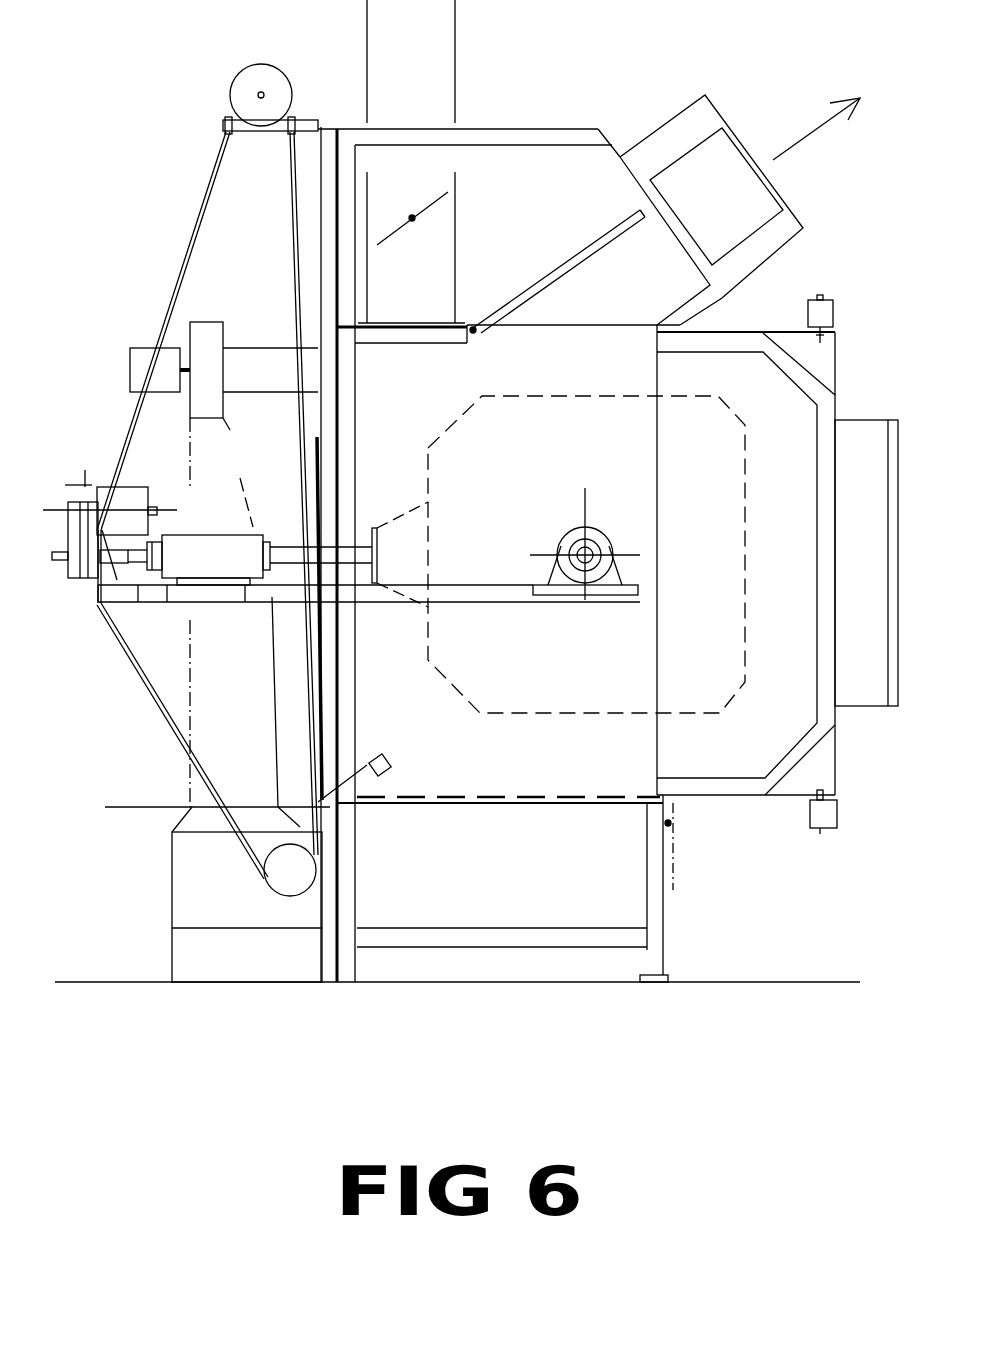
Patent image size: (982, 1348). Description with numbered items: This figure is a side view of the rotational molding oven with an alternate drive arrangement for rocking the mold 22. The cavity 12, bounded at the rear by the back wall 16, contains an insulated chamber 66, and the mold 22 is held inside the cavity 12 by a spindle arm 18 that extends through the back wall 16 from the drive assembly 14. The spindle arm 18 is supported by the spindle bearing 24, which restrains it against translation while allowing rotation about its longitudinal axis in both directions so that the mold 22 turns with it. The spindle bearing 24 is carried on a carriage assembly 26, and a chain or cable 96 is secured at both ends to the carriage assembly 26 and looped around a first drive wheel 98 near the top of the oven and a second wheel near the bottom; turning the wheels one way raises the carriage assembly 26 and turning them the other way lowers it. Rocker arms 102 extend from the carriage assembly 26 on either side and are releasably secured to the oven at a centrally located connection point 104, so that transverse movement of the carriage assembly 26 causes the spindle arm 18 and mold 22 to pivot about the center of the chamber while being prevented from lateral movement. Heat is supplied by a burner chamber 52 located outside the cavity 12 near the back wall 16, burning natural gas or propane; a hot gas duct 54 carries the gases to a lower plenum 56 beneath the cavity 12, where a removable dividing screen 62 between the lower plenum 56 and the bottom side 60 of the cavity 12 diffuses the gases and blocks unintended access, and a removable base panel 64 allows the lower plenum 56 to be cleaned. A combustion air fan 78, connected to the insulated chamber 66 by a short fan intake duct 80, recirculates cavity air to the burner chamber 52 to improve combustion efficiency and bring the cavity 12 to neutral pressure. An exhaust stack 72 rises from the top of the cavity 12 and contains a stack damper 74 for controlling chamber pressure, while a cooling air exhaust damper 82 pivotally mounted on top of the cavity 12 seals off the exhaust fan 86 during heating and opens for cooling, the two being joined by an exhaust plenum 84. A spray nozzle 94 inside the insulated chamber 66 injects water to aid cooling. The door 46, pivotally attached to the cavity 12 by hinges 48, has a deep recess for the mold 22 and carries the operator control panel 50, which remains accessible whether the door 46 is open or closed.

The cavity 12 is at (793, 732).
The drive assembly 14 is at (78, 580).
The back wall 16 is at (357, 430).
The spindle arm 18 is at (292, 557).
The mold 22 is at (730, 475).
The spindle bearing 24 is at (215, 553).
The carriage assembly 26 is at (217, 595).
The door 46 is at (827, 390).
The hinges 48 is at (835, 310).
The operator control panel 50 is at (843, 607).
The burner chamber 52 is at (143, 358).
The hot gas duct 54 is at (199, 900).
The lower plenum 56 is at (521, 900).
The bottom side 60 is at (518, 796).
The removable dividing screen 62 is at (502, 805).
The removable base panel 64 is at (492, 943).
The insulated chamber 66 is at (314, 484).
The exhaust stack 72 is at (427, 53).
The stack damper 74 is at (433, 198).
The combustion air fan 78 is at (200, 322).
The fan intake duct 80 is at (243, 347).
The cooling air exhaust damper 82 is at (607, 327).
The exhaust plenum 84 is at (798, 238).
The exhaust fan 86 is at (763, 197).
The spray nozzle 94 is at (380, 760).
The chain or cable 96 is at (125, 442).
The first drive wheel 98 is at (240, 85).
The rocker arms 102 is at (520, 596).
The connection point 104 is at (593, 541).